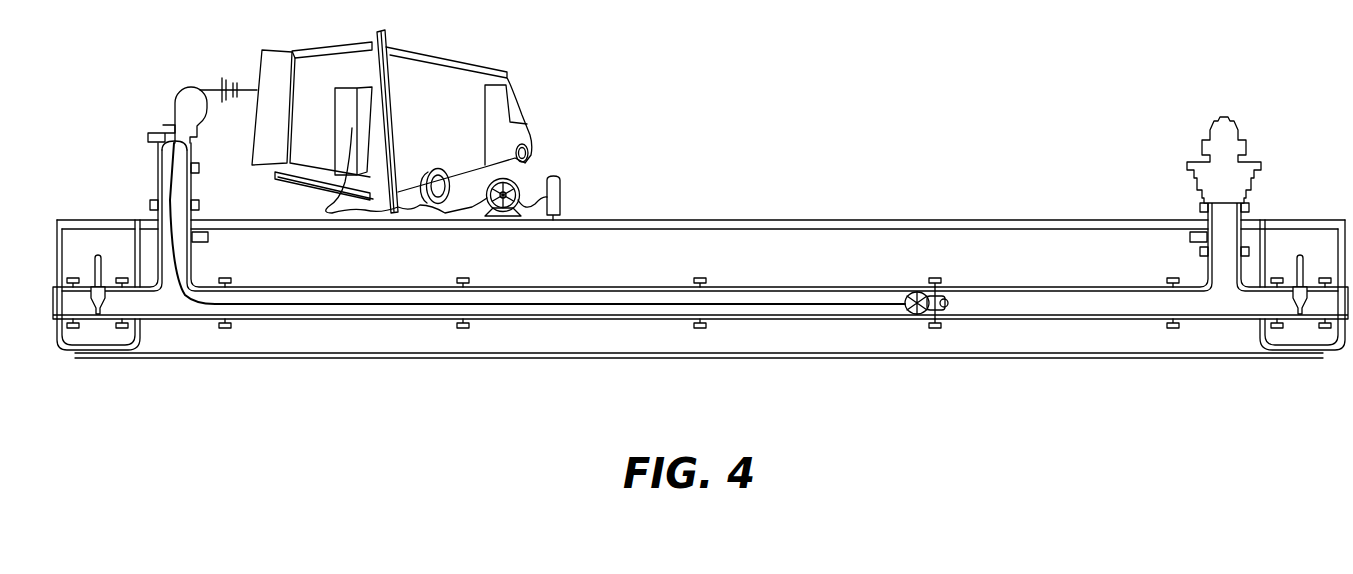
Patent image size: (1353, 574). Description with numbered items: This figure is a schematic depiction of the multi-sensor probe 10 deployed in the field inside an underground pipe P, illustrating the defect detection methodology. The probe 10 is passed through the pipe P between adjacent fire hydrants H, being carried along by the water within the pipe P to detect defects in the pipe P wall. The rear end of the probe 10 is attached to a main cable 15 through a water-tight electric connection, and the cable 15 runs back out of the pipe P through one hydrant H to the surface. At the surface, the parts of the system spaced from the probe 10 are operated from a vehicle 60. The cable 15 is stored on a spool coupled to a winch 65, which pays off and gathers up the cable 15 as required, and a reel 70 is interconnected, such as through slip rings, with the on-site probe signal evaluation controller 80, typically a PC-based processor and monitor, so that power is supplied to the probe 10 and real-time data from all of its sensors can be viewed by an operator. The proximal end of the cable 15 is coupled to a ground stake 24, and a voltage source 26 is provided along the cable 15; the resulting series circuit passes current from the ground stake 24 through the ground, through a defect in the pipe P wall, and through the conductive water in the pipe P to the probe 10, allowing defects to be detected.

The multi-sensor probe 10 is at (918, 266).
The main cable 15 is at (815, 304).
The ground stake 24 is at (560, 197).
The voltage source 26 is at (228, 80).
The vehicle 60 is at (445, 78).
The winch 65 is at (187, 95).
The reel 70 is at (518, 187).
The on-site probe signal evaluation controller 80 is at (342, 108).
The pipe P is at (580, 320).
The fire hydrant H is at (158, 130).